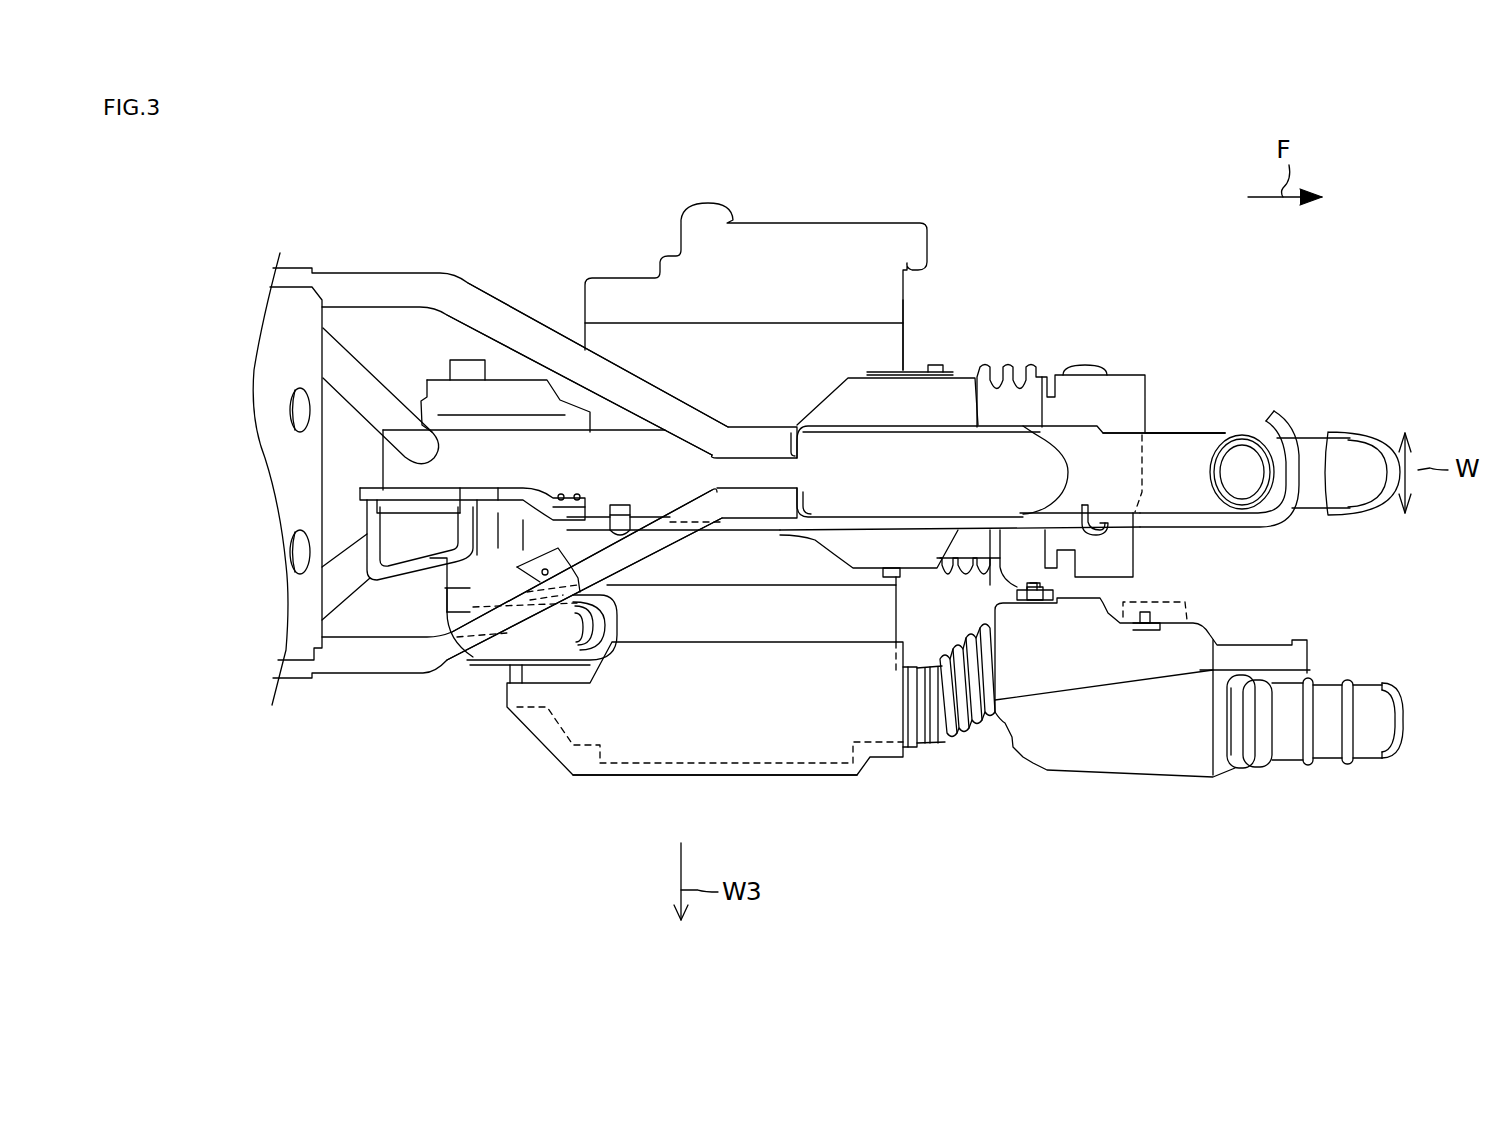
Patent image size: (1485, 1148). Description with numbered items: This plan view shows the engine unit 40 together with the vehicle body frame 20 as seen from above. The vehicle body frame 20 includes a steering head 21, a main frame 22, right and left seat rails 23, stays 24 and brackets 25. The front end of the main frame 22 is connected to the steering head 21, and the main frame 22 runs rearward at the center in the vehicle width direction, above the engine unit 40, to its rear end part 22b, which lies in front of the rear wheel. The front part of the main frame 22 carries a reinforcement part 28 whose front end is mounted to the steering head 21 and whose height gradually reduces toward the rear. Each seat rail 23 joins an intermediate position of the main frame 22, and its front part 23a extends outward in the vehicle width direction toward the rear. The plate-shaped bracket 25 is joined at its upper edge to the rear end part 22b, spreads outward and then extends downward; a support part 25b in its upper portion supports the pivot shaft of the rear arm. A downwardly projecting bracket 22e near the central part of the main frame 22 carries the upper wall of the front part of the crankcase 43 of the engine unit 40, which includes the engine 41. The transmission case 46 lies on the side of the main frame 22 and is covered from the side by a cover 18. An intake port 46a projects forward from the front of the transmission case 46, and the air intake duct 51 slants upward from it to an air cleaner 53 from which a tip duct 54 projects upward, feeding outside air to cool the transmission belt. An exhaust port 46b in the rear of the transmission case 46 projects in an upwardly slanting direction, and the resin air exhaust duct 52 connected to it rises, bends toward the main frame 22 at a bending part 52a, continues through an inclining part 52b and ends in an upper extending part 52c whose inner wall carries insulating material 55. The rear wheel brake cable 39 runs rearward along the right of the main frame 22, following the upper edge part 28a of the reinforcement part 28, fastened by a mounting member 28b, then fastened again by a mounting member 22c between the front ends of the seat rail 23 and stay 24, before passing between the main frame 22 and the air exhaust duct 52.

The cover 18 is at (773, 775).
The vehicle body frame 20 is at (1237, 420).
The steering head 21 is at (1313, 440).
The main frame 22 is at (853, 447).
The rear end part 22b is at (383, 467).
The mounting member 22c is at (620, 523).
The bracket 22e is at (965, 377).
The seat rail 23 is at (390, 283).
The front part of seat rail 23a is at (543, 333).
The stay 24 is at (350, 363).
The bracket 25 is at (497, 388).
The support part 25b is at (467, 367).
The reinforcement part 28 is at (1192, 462).
The upper edge part 28a is at (1177, 448).
The mounting member 28b is at (1082, 505).
The rear wheel brake cable 39 is at (1227, 517).
The engine unit 40 is at (826, 222).
The engine 41 is at (1023, 397).
The crankcase 43 is at (897, 350).
The transmission case 46 is at (822, 770).
The intake port 46a is at (913, 752).
The exhaust port 46b is at (617, 612).
The air intake duct 51 is at (950, 740).
The air exhaust duct 52 is at (462, 660).
The bending part 52a is at (518, 647).
The inclining part 52b is at (447, 588).
The upper extending part 52c is at (393, 582).
The air cleaner 53 is at (1093, 760).
The tip duct 54 is at (1290, 750).
The insulating material 55 is at (453, 503).